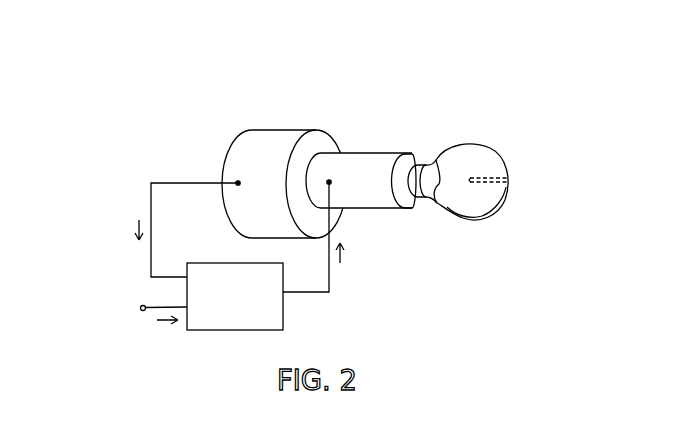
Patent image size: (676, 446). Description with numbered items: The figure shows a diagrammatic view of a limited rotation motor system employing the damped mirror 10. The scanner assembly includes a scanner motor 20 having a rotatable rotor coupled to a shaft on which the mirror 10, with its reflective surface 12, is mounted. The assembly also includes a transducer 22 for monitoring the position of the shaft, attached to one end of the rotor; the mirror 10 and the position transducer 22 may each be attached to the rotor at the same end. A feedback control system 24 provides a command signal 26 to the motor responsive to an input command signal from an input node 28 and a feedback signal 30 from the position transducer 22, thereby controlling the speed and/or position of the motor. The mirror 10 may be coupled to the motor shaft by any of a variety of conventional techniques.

The damped mirror 10 is at (515, 131).
The reflective surface 12 is at (469, 152).
The scanner motor 20 is at (380, 153).
The transducer 22 is at (286, 130).
The feedback control system 24 is at (245, 301).
The command signal 26 is at (332, 283).
The input node 28 is at (140, 309).
The feedback signal 30 is at (186, 182).